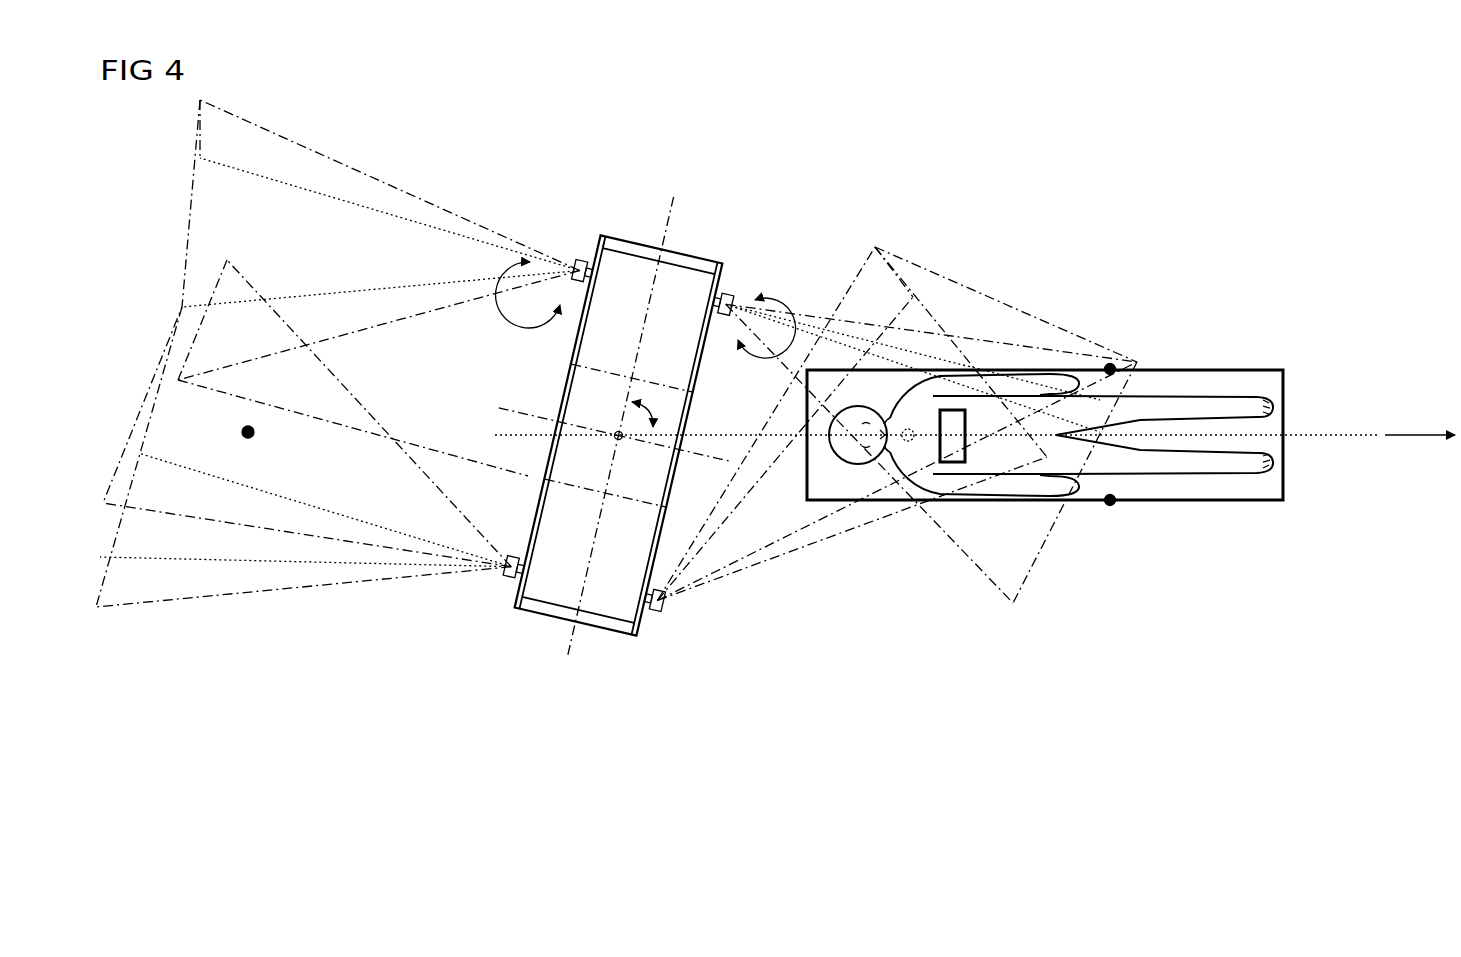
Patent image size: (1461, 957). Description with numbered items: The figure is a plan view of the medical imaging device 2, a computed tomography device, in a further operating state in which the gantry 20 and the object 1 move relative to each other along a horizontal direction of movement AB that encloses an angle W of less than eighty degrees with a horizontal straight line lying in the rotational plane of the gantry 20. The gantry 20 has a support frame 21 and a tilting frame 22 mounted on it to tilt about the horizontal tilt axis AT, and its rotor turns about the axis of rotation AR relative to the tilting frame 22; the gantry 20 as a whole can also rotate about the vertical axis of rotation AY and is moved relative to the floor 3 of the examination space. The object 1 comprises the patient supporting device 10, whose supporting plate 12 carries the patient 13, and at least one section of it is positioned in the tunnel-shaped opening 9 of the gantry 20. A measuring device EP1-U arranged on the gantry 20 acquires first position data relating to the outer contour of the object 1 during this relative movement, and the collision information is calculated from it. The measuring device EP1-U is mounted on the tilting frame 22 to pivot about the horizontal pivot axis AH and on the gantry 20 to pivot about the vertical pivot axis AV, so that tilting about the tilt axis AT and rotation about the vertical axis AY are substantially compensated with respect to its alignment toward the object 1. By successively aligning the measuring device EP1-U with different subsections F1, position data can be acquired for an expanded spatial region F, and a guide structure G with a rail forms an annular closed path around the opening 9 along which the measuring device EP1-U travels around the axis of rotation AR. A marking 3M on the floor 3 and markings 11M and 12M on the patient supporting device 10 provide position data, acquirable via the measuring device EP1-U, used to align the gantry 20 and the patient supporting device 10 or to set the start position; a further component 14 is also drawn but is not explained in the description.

The object 1 is at (1143, 618).
The patient supporting device 10 is at (1090, 592).
The medical imaging device 2 is at (566, 378).
The gantry 20 is at (490, 203).
The support frame 21 is at (644, 258).
The tilting frame 22 is at (605, 257).
The floor 3 is at (870, 714).
The marking 3M is at (257, 440).
The opening 9 is at (580, 387).
The marking 11M is at (1110, 364).
The supporting plate 12 is at (1245, 502).
The marking 12M is at (908, 445).
The patient 13 is at (1205, 395).
The table 14 is at (932, 388).
The expanded spatial region F is at (292, 138).
The subsection F1 is at (1023, 537).
The guide structure G is at (663, 556).
The angle W is at (655, 412).
The horizontal pivot axis AH is at (937, 401).
The horizontal direction of movement AB is at (1432, 432).
The vertical axis of rotation AY is at (608, 447).
The axis of rotation AR is at (717, 459).
The vertical pivot axis AV is at (727, 257).
The horizontal tilt axis AT is at (677, 208).
The measuring device EP1-U is at (587, 258).